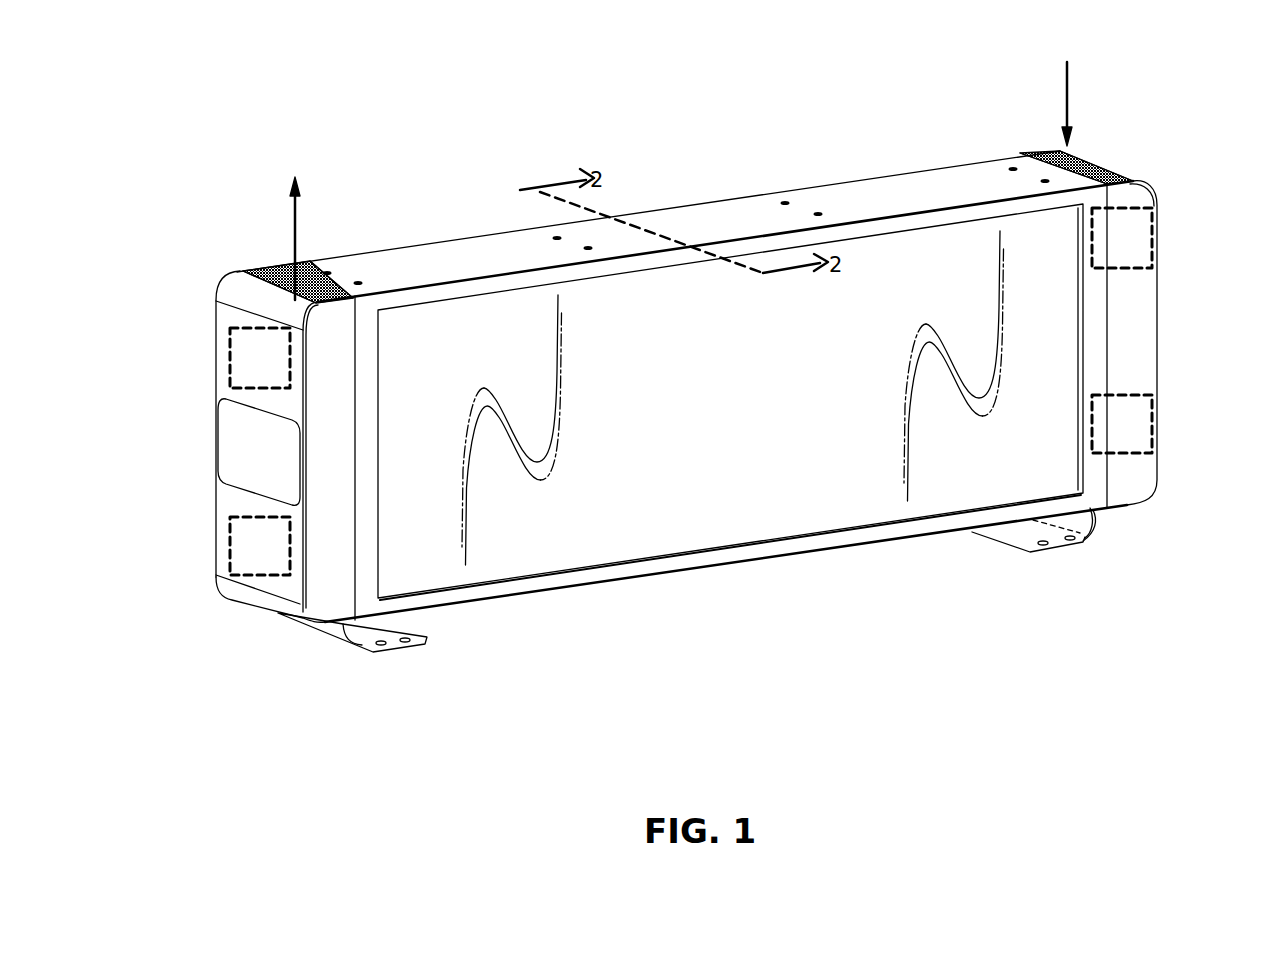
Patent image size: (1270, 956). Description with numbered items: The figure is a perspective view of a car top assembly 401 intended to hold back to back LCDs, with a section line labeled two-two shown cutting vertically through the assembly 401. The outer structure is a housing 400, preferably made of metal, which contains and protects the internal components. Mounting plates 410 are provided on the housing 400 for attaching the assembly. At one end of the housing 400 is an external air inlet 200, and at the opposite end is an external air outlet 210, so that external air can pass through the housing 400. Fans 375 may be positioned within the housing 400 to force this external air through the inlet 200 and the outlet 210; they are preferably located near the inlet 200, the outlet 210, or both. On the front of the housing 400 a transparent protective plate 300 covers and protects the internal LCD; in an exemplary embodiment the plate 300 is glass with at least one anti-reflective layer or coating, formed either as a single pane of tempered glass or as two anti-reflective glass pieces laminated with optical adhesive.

The external air inlet 200 is at (1093, 163).
The external air outlet 210 is at (264, 268).
The transparent protective plate 300 is at (798, 508).
The fans 375 is at (232, 344).
The housing 400 is at (826, 205).
The car top assembly 401 is at (707, 185).
The mounting plates 410 is at (363, 636).